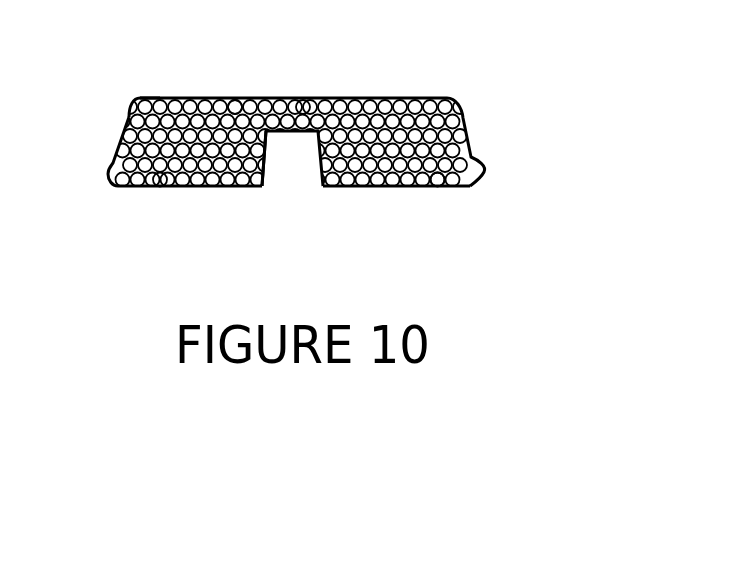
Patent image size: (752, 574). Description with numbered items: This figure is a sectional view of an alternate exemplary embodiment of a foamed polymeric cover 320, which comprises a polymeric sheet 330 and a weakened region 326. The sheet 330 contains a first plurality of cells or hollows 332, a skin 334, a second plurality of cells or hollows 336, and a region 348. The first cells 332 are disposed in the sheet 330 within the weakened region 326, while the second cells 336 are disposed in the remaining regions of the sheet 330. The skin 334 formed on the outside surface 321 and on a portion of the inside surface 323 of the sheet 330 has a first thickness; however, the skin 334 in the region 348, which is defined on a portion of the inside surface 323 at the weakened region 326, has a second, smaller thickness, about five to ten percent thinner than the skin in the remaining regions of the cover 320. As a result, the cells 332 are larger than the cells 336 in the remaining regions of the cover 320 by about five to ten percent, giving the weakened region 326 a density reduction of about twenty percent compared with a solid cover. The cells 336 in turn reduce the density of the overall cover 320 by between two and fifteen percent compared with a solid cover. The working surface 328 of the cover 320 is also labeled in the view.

The foamed polymeric cover 320 is at (557, 135).
The outside surface 321 is at (158, 98).
The inside surface 323 is at (343, 187).
The weakened region 326 is at (293, 192).
The working surface 328 is at (339, 95).
The polymeric sheet 330 is at (472, 121).
The first plurality of cells or hollows 332 is at (304, 104).
The skin 334 is at (233, 97).
The second plurality of cells or hollows 336 is at (135, 134).
The region 348 is at (270, 186).